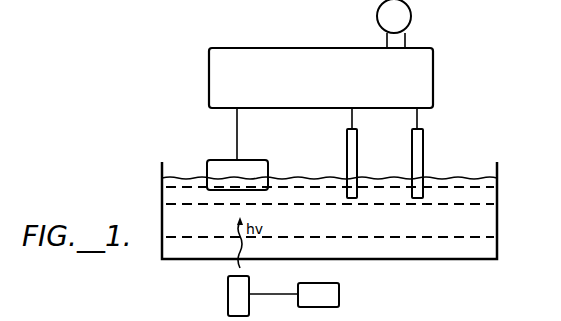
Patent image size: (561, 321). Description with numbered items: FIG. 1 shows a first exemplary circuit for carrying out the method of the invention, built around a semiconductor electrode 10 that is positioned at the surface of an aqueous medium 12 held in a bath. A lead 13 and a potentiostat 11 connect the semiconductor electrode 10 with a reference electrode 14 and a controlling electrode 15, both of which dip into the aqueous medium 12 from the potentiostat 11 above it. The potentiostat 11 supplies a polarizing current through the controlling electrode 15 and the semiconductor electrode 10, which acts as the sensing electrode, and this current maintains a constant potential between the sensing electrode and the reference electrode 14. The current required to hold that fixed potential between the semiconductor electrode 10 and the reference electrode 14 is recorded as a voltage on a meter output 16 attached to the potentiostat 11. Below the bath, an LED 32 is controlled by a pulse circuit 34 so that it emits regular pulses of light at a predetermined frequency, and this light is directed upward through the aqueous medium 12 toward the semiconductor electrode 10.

The semiconductor electrode 10 is at (215, 160).
The potentiostat 11 is at (435, 71).
The aqueous medium 12 is at (170, 199).
The lead 13 is at (237, 133).
The reference electrode 14 is at (357, 153).
The controlling electrode 15 is at (423, 153).
The meter output 16 is at (412, 16).
The LED 32 is at (228, 286).
The pulse circuit 34 is at (339, 293).